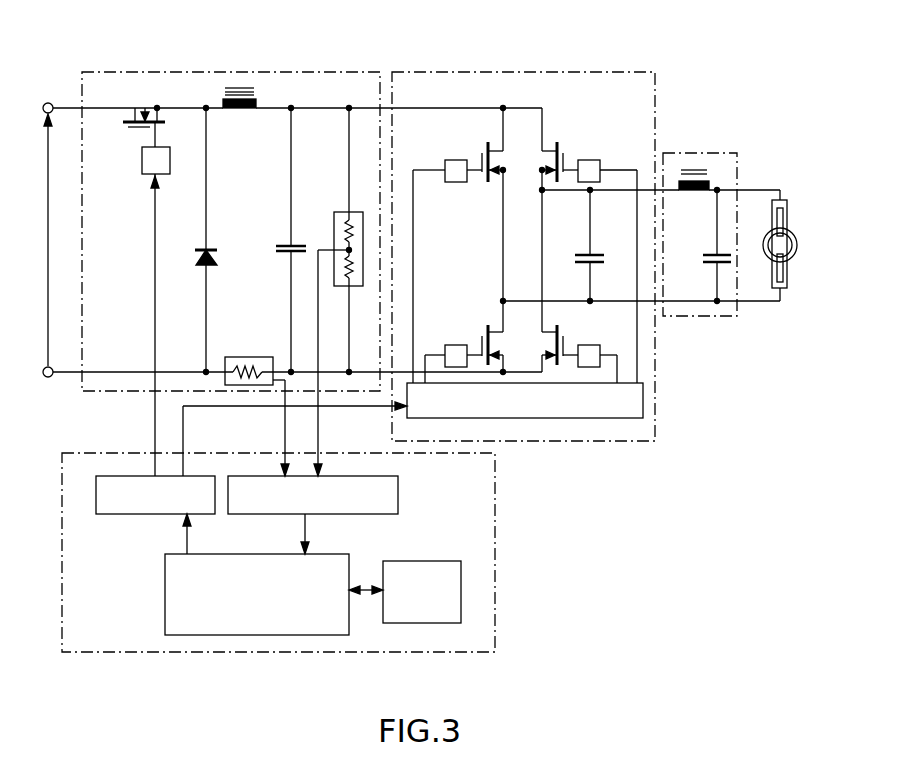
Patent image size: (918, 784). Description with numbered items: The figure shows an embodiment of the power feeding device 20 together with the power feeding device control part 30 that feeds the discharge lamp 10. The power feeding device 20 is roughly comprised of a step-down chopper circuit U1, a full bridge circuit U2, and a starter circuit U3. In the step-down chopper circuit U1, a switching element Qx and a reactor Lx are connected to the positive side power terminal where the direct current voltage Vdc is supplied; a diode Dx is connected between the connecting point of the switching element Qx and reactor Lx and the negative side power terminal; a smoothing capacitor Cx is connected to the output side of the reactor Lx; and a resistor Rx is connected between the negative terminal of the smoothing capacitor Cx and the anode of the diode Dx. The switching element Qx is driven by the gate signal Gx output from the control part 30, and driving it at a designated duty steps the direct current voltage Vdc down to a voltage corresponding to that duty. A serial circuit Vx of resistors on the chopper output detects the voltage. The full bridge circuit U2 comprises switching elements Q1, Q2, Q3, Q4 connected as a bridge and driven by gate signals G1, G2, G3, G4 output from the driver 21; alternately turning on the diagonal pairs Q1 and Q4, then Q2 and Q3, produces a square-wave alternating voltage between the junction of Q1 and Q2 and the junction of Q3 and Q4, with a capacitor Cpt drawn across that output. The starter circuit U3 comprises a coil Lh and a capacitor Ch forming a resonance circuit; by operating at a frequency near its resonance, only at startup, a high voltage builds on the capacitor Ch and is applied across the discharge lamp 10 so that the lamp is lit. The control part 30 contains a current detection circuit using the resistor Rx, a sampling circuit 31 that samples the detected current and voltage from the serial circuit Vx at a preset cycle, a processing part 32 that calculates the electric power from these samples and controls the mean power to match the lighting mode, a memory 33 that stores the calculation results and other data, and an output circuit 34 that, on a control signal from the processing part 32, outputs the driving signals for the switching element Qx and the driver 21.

The discharge lamp 10 is at (791, 258).
The power feeding device 20 is at (490, 47).
The driver 21 is at (558, 418).
The power feeding device control part 30 is at (405, 652).
The sampling circuit 31 is at (398, 495).
The processing part 32 is at (349, 560).
The memory 33 is at (427, 561).
The output circuit 34 is at (138, 515).
The step-down chopper circuit U1 is at (240, 72).
The full bridge circuit U2 is at (518, 72).
The starter circuit U3 is at (689, 153).
The switching element Qx is at (129, 128).
The gate signal Gx is at (142, 168).
The reactor Lx is at (229, 109).
The diode Dx is at (210, 264).
The smoothing capacitor Cx is at (286, 246).
The resistor Rx is at (240, 357).
The serial circuit Vx is at (335, 213).
The switching element Q1 is at (486, 148).
The switching element Q2 is at (486, 330).
The switching element Q3 is at (559, 333).
The switching element Q4 is at (559, 148).
The gate signal G1 is at (445, 161).
The gate signal G2 is at (448, 346).
The gate signal G3 is at (598, 345).
The gate signal G4 is at (590, 160).
The capacitor Cpt is at (585, 255).
The coil Lh is at (685, 192).
The capacitor Ch is at (714, 264).
The direct current voltage Vdc is at (34, 242).